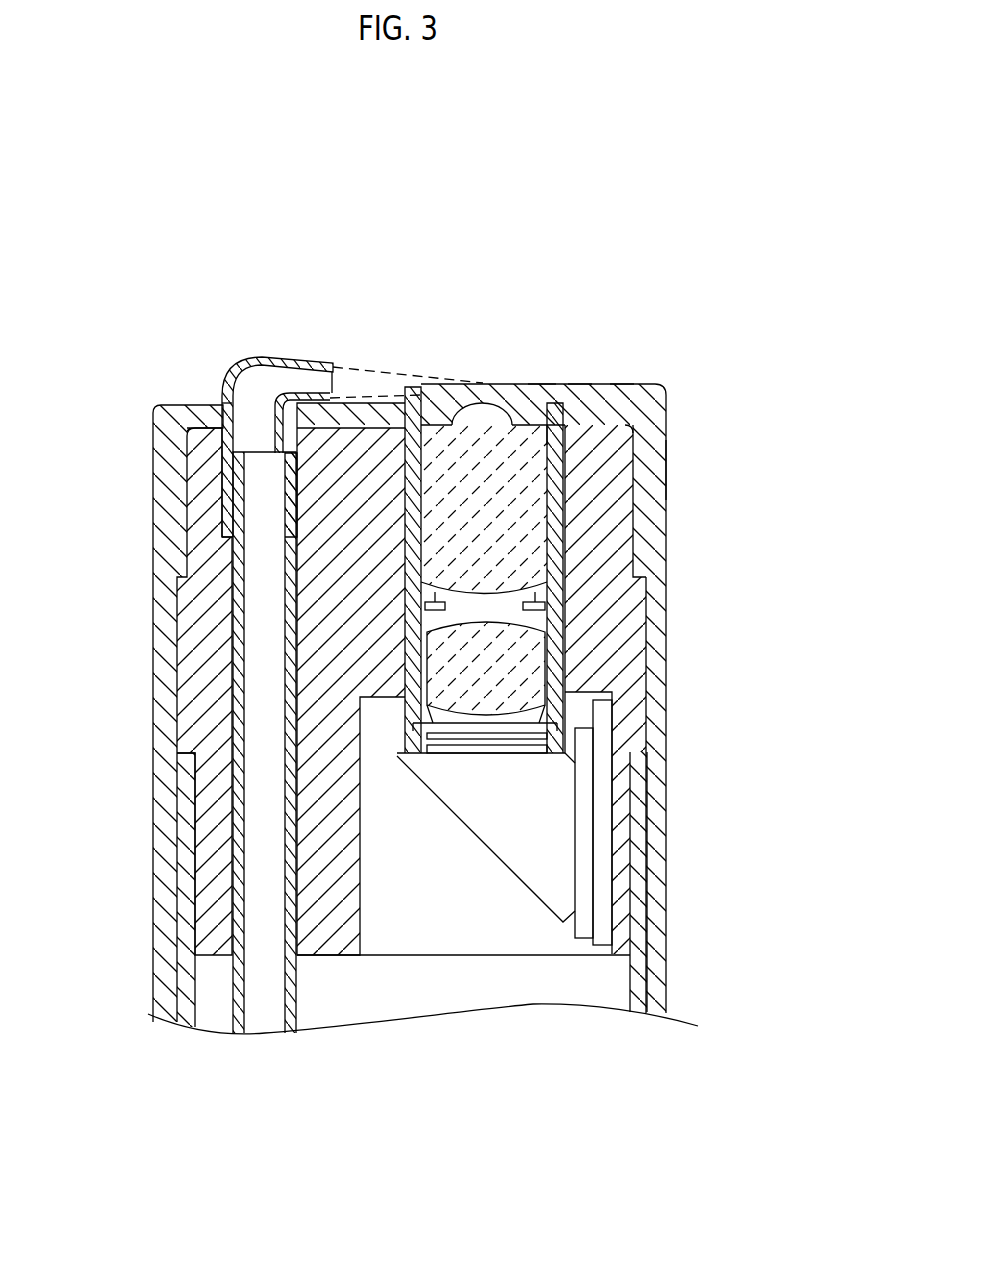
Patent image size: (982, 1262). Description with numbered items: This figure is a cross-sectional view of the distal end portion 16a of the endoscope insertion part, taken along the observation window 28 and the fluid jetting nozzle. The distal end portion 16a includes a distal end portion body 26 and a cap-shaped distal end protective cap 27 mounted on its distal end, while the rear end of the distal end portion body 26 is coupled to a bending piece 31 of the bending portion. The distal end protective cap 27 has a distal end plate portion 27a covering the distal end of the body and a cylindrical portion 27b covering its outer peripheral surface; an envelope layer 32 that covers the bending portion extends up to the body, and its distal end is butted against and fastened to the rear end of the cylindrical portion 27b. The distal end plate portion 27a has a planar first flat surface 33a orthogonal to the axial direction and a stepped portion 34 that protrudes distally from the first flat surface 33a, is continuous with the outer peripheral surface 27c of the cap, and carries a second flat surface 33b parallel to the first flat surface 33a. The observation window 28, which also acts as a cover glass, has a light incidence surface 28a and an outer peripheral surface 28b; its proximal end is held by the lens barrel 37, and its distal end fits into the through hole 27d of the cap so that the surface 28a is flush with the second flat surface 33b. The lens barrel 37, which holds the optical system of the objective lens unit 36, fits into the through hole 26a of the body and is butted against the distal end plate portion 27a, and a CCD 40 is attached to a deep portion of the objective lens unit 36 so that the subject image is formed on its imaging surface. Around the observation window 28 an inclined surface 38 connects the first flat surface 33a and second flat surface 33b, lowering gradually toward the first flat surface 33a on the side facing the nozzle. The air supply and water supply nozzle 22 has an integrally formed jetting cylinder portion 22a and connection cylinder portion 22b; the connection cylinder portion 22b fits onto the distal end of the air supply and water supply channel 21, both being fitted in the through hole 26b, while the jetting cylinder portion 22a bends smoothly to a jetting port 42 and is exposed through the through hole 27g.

The distal end portion 16a is at (295, 170).
The air supply and water supply channel 21 is at (262, 998).
The air supply and water supply nozzle 22 is at (303, 247).
The jetting cylinder portion 22a is at (307, 380).
The connection cylinder portion 22b is at (253, 455).
The distal end portion body 26 is at (612, 662).
The through hole 26a is at (566, 680).
The through hole 26b is at (225, 510).
The distal end protective cap 27 is at (730, 383).
The distal end plate portion 27a is at (617, 413).
The cylindrical portion 27b is at (650, 492).
The outer peripheral surface 27c is at (665, 468).
The through hole 27d is at (540, 393).
The through hole 27g is at (223, 403).
The observation window 28 is at (494, 376).
The surface 28a is at (448, 383).
The outer peripheral surface 28b is at (556, 398).
The bending piece 31 is at (640, 990).
The envelope layer 32 is at (652, 772).
The first flat surface 33a is at (203, 403).
The second flat surface 33b is at (620, 383).
The stepped portion 34 is at (576, 393).
The objective lens unit 36 is at (491, 682).
The lens barrel 37 is at (557, 592).
The inclined surface 38 is at (407, 388).
The CCD 40 is at (607, 887).
The jetting port 42 is at (337, 390).